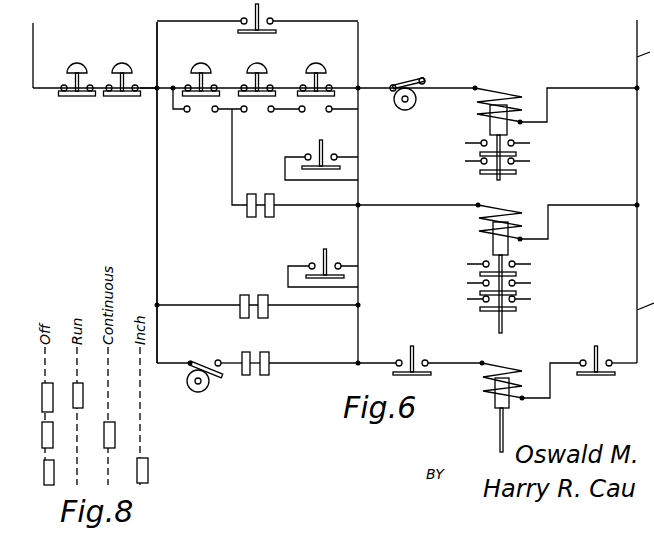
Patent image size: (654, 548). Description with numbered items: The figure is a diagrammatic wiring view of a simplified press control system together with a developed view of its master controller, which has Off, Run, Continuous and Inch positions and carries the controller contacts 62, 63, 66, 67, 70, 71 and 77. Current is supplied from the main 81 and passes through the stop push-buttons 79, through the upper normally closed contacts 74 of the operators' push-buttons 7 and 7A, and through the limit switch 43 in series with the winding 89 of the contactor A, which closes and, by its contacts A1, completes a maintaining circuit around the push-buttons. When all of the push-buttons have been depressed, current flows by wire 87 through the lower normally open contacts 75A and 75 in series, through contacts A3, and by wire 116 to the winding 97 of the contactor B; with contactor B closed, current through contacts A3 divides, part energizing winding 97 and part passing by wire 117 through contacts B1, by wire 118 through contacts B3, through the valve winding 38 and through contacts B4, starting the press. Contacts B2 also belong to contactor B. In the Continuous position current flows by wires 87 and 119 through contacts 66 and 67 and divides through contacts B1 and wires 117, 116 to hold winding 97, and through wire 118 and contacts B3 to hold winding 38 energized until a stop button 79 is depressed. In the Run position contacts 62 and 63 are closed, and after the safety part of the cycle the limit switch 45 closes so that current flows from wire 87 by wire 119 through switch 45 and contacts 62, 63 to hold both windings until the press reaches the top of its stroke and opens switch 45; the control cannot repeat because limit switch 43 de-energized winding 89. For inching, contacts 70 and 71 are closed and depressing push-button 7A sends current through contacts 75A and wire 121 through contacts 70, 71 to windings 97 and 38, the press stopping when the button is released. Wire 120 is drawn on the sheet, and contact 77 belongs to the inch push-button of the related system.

In FIG. 6, the main 81 is at (37, 51).
In FIG. 6, the stop push-buttons 79 is at (116, 65).
In FIG. 6, the wire 87 is at (145, 91).
In FIG. 6, the operators' push-button 7A is at (202, 64).
In FIG. 6, the normally closed contacts 74 is at (211, 87).
In FIG. 6, the operators' push-buttons 7 is at (307, 66).
In FIG. 6, the contacts of contactor A A1 is at (266, 25).
In FIG. 6, the contacts of push-button 7A 75A is at (196, 116).
In FIG. 6, the normally open contacts 75 is at (254, 115).
In FIG. 6, the wire 121 is at (234, 163).
In FIG. 6, the wire 119 is at (159, 184).
In FIG. 6, the contacts of contactor A A3 is at (326, 150).
In FIG. 6, the limit switch 43 is at (409, 82).
In FIG. 6, the winding of contactor A 89 is at (510, 102).
In FIG. 6, the contactor A is at (472, 129).
In FIG. 6, the wire 116 is at (401, 205).
In FIG. 6, the contact 70 is at (251, 219).
In FIG. 8, the contact 70 is at (51, 469).
In FIG. 6, the contact 71 is at (271, 219).
In FIG. 8, the contact 71 is at (147, 461).
In FIG. 6, the wire 117 is at (359, 238).
In FIG. 6, the wire 118 is at (359, 334).
In FIG. 6, the contacts of contactor B B1 is at (329, 265).
In FIG. 6, the winding of contactor B 97 is at (513, 221).
In FIG. 6, the contactor B is at (474, 250).
In FIG. 6, the contacts of contactor B B2 is at (517, 283).
In FIG. 6, the contacts of contactor B B3 is at (517, 299).
In FIG. 6, the contact 66 is at (243, 318).
In FIG. 8, the contact 66 is at (51, 434).
In FIG. 6, the contact 67 is at (263, 318).
In FIG. 6, the limit switch 45 is at (201, 366).
In FIG. 6, the contact 62 is at (246, 376).
In FIG. 8, the contact 62 is at (49, 389).
In FIG. 6, the contact 63 is at (264, 376).
In FIG. 8, the contact 63 is at (80, 387).
In FIG. 6, the conductor 120 is at (308, 363).
In FIG. 6, the valve winding 38 is at (482, 383).
In FIG. 6, the contacts of contactor B B4 is at (611, 361).
In FIG. 8, the normally open contact 77 is at (112, 426).